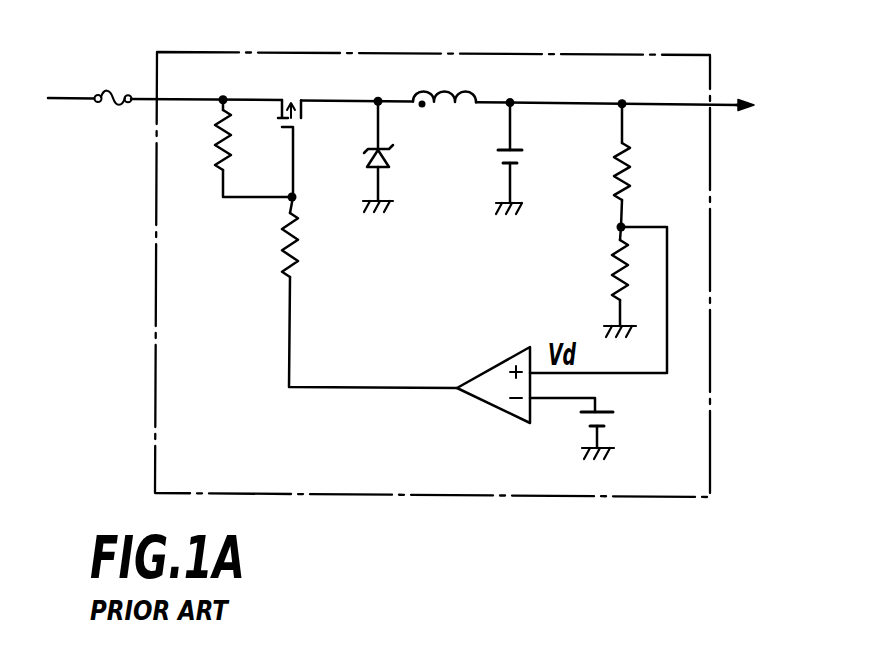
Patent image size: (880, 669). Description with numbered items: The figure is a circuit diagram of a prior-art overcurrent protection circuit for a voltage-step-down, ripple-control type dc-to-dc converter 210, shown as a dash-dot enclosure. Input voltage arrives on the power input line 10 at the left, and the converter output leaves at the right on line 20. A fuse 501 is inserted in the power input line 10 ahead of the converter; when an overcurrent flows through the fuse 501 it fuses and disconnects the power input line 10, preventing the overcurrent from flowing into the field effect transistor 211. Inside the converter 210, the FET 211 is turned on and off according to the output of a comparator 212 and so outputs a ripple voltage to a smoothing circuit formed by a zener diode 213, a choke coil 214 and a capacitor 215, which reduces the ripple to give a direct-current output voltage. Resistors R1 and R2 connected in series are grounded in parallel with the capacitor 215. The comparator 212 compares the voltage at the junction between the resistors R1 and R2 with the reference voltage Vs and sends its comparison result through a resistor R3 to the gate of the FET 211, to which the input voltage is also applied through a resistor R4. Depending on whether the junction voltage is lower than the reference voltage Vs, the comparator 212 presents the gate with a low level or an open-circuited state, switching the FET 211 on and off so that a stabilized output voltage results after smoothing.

The power input line 10 is at (58, 100).
The output line 20 is at (727, 103).
The fuse 501 is at (97, 94).
The dc-to-dc converter 210 is at (410, 495).
The field effect transistor 211 is at (281, 100).
The comparator 212 is at (499, 358).
The zener diode 213 is at (370, 170).
The choke coil 214 is at (448, 92).
The capacitor 215 is at (505, 175).
The resistor R1 is at (643, 165).
The resistor R2 is at (599, 282).
The resistor R3 is at (369, 292).
The resistor R4 is at (237, 148).
The reference voltage Vs is at (618, 435).